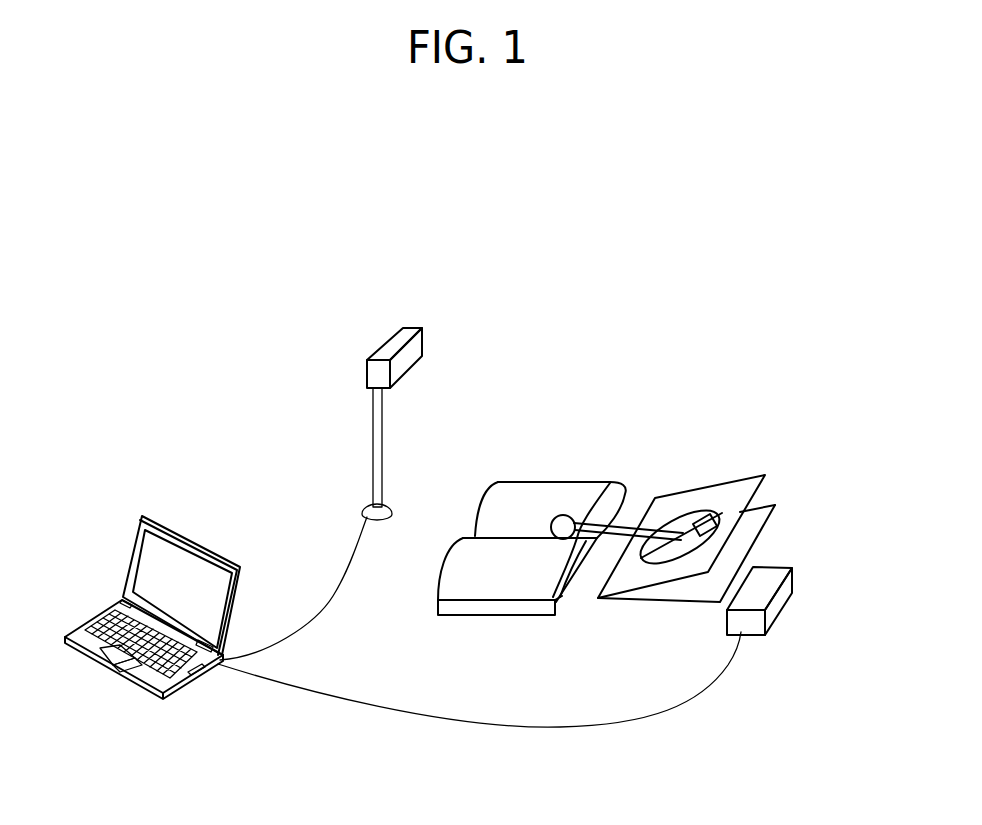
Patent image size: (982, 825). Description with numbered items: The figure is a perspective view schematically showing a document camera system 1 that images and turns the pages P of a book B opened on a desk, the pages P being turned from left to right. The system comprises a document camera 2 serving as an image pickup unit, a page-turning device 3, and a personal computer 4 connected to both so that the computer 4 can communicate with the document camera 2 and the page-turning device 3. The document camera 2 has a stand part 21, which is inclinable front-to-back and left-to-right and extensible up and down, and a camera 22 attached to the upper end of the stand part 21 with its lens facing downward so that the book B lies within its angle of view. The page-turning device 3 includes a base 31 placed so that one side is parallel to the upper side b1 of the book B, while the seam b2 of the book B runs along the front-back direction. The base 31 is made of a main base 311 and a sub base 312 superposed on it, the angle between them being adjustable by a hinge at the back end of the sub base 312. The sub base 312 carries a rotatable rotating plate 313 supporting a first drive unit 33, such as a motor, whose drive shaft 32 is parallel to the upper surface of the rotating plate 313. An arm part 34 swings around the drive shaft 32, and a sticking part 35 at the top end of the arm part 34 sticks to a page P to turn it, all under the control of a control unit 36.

The document camera system 1 is at (437, 250).
The document camera 2 is at (372, 342).
The stand part 21 is at (372, 448).
The camera 22 is at (412, 325).
The page-turning device 3 is at (785, 472).
The base 31 is at (638, 608).
The main base 311 is at (698, 593).
The sub base 312 is at (743, 487).
The rotating plate 313 is at (738, 517).
The drive shaft 32 is at (681, 513).
The first drive unit 33 is at (708, 512).
The arm part 34 is at (625, 523).
The sticking part 35 is at (568, 512).
The control unit 36 is at (772, 577).
The personal computer 4 is at (193, 538).
The book B is at (545, 477).
The page P is at (498, 488).
The upper side b1 is at (565, 598).
The seam b2 is at (475, 535).